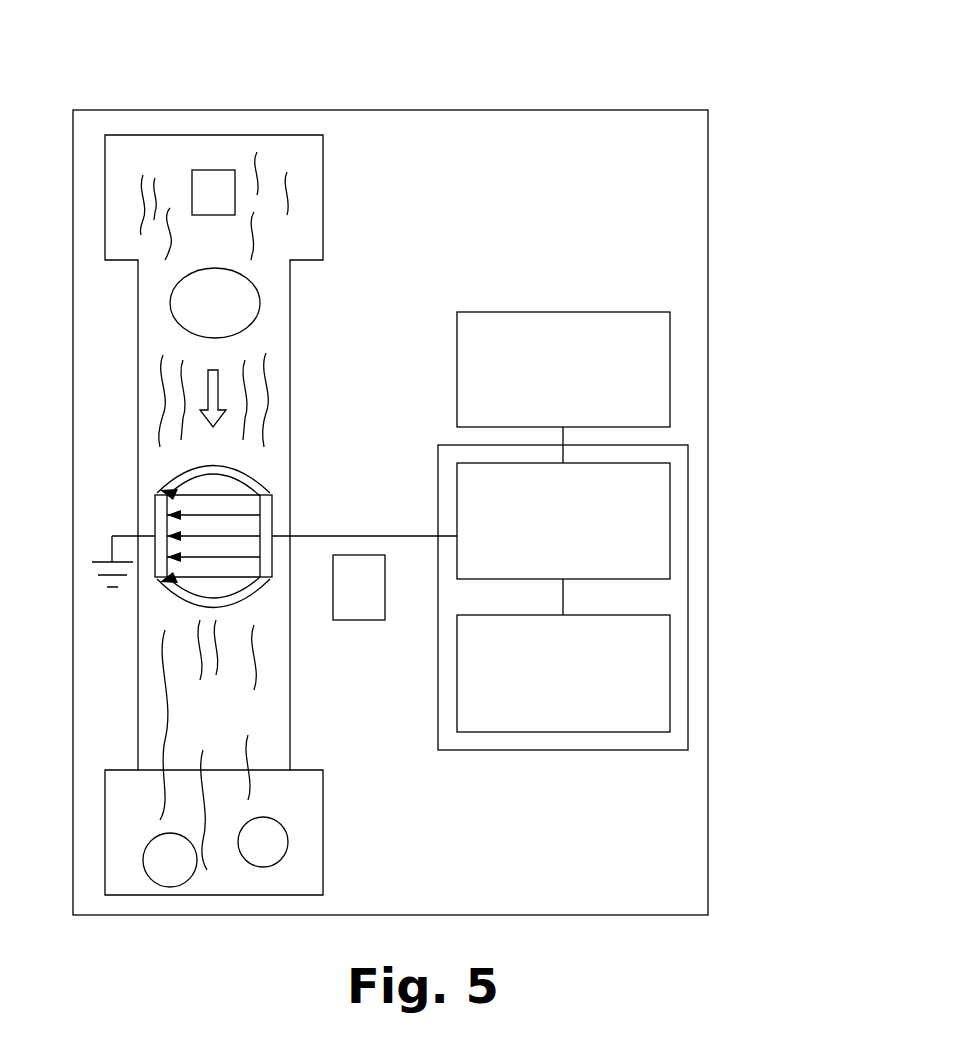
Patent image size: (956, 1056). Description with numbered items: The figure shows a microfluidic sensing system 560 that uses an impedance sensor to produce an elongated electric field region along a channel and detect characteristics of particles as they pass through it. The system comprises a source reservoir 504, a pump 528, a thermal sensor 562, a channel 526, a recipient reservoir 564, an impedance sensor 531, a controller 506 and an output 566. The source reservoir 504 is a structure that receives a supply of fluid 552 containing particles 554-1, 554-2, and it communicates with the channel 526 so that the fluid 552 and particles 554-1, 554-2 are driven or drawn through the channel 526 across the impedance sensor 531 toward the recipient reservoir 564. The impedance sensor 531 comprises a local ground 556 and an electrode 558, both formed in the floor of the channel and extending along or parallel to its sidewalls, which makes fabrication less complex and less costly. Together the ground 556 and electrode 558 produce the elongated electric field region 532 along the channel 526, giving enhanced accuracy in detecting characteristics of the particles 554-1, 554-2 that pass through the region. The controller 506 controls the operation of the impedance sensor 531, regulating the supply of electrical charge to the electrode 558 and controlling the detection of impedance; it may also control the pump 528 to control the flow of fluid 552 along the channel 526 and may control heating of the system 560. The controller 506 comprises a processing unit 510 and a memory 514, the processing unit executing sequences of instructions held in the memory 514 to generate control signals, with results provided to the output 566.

The source reservoir 504 is at (323, 172).
The controller 506 is at (563, 750).
The processing unit 510 is at (670, 518).
The memory 514 is at (670, 671).
The channel 526 is at (290, 395).
The pump 528 is at (213, 170).
The impedance sensor 531 is at (272, 483).
The electric field region 532 is at (233, 721).
The fluid 552 is at (303, 235).
The particle 554-1 is at (258, 298).
The particle 554-2 is at (188, 838).
The local ground 556 is at (155, 513).
The electrode 558 is at (270, 578).
The microfluidic sensing system 560 is at (754, 268).
The thermal sensor 562 is at (373, 620).
The recipient reservoir 564 is at (323, 863).
The output 566 is at (560, 312).